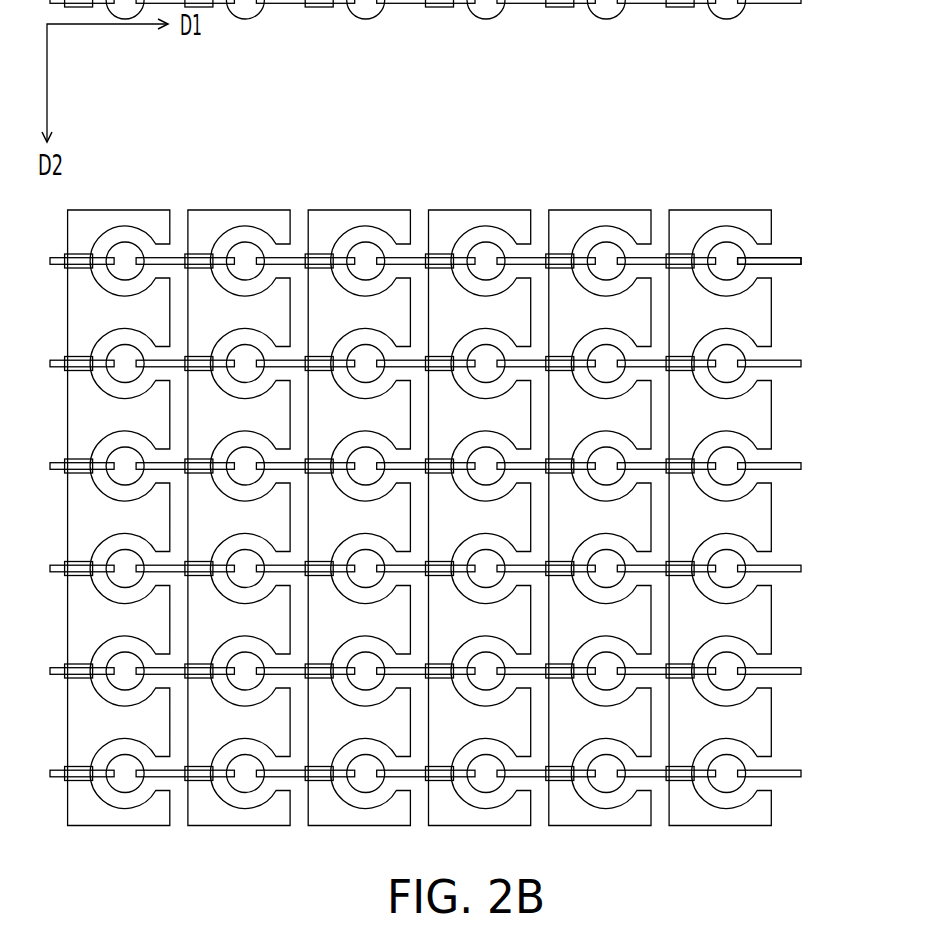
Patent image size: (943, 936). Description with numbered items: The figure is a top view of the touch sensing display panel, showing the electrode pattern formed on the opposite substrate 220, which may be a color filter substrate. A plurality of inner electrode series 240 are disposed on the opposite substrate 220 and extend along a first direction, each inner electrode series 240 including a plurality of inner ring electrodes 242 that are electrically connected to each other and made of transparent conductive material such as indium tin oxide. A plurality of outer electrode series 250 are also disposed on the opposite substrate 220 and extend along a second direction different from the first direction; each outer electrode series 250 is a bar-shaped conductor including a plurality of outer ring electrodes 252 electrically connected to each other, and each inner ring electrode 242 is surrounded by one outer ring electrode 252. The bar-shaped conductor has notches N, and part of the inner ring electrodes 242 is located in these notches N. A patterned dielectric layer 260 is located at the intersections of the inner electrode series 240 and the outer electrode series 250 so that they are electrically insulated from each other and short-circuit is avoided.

The opposite substrate 220 is at (471, 425).
The inner electrode series 240 is at (471, 388).
The inner ring electrode 242 is at (728, 267).
The outer electrode series 250 is at (480, 484).
The outer ring electrode 252 is at (760, 222).
The patterned dielectric layer 260 is at (681, 257).
The notch N is at (750, 379).